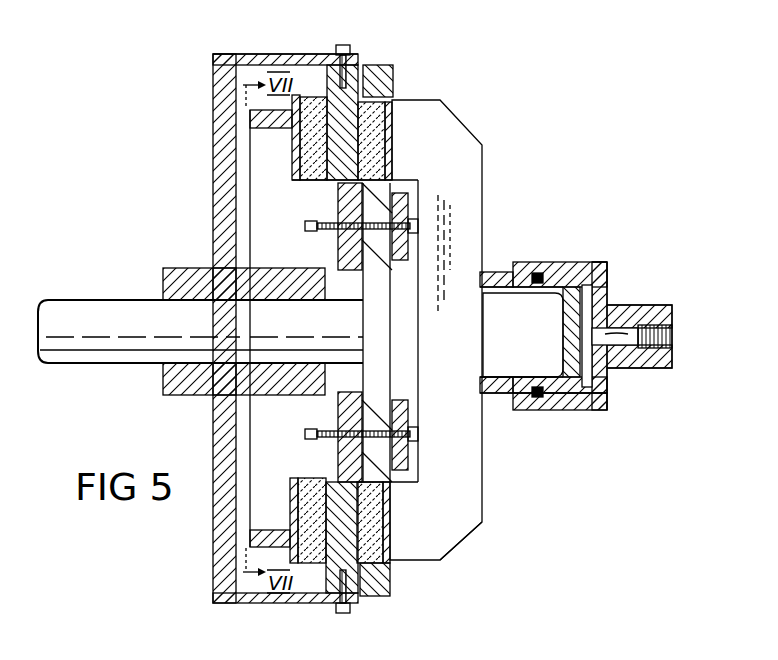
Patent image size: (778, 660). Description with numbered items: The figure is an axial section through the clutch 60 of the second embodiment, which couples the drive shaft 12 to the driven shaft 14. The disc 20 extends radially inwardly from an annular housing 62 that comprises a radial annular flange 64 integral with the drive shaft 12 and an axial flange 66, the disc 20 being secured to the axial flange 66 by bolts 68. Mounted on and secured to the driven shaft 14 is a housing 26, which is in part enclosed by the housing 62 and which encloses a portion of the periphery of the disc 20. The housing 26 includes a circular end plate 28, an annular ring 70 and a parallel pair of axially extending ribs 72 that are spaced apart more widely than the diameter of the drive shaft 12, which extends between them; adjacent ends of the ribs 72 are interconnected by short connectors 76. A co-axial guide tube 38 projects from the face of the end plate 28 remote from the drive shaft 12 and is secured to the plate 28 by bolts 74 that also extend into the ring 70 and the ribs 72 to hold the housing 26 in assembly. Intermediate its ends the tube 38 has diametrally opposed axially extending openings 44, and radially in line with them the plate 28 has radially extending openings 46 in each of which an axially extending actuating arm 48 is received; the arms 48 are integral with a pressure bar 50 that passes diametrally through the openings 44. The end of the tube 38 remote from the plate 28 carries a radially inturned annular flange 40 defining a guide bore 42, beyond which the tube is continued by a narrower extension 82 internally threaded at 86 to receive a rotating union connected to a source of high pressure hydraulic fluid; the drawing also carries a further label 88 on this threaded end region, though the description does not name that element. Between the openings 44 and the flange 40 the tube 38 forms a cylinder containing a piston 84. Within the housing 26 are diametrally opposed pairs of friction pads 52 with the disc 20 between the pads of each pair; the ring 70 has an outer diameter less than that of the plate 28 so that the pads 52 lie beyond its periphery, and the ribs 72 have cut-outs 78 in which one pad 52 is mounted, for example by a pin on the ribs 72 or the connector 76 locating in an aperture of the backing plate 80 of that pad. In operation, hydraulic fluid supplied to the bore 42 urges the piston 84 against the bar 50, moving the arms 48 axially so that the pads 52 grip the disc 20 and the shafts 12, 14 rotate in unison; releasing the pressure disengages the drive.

The clutch 60 is at (135, 92).
The annular housing 62 is at (240, 46).
The radial annular flange 64 is at (222, 158).
The axial flange 66 is at (283, 62).
The bolts 68 is at (336, 44).
The opening 46 is at (388, 102).
The actuating arm 48 is at (400, 140).
The bolts 74 is at (408, 212).
The openings 44 is at (484, 262).
The internal thread 86 is at (537, 273).
The housing 26 is at (408, 325).
The piston 84 is at (565, 330).
The guide bore 42 is at (622, 332).
The threaded end 88 is at (660, 347).
The annular flange 40 is at (595, 377).
The extension 82 is at (648, 360).
The guide tube 38 is at (542, 400).
The pressure bar 50 is at (450, 406).
The end plate 28 is at (392, 472).
The friction pads 52 is at (370, 500).
The disc 20 is at (402, 535).
The drive shaft 12 is at (185, 272).
The driven shaft 14 is at (125, 317).
The ribs 72 is at (277, 412).
The connectors 76 is at (292, 143).
The cut-outs 78 is at (303, 470).
The backing plate 80 is at (292, 160).
The annular ring 70 is at (340, 206).